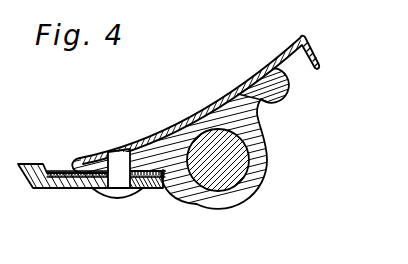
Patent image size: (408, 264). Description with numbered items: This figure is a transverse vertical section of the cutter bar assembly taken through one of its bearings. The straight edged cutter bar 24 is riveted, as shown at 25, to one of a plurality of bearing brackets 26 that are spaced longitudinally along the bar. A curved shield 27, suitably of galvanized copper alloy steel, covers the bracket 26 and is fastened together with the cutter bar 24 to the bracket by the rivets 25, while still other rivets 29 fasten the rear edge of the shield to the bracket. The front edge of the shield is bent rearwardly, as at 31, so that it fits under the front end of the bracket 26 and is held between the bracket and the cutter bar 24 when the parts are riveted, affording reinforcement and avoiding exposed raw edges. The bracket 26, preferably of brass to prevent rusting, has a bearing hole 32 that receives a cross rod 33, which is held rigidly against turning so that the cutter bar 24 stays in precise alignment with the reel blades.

The cutter bar 24 is at (33, 189).
The rivets 25 is at (113, 197).
The bearing brackets 26 is at (219, 199).
The curved shield 27 is at (207, 110).
The rivets 29 is at (281, 99).
The rearwardly bent front edge of shield 31 is at (143, 191).
The bearing holes 32 is at (192, 195).
The cross rod 33 is at (237, 141).